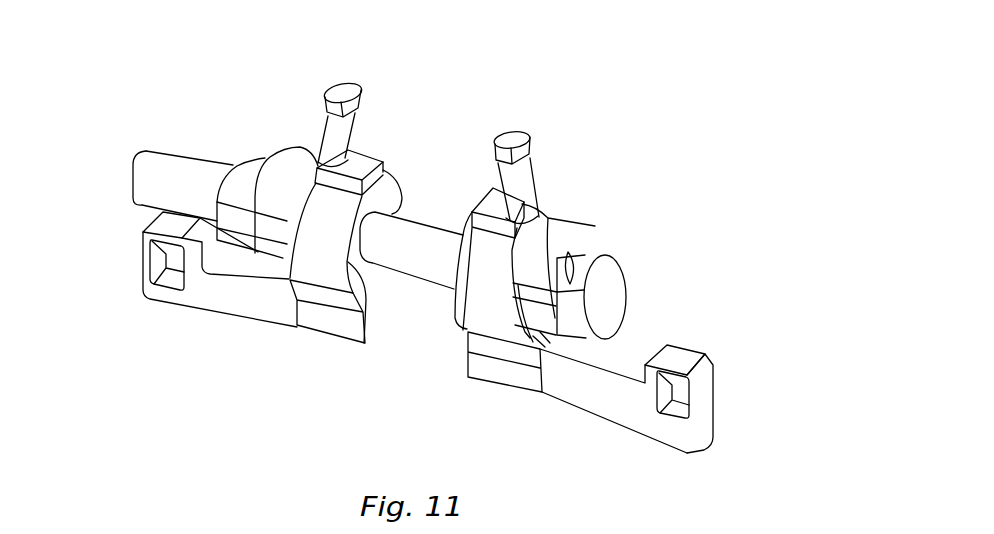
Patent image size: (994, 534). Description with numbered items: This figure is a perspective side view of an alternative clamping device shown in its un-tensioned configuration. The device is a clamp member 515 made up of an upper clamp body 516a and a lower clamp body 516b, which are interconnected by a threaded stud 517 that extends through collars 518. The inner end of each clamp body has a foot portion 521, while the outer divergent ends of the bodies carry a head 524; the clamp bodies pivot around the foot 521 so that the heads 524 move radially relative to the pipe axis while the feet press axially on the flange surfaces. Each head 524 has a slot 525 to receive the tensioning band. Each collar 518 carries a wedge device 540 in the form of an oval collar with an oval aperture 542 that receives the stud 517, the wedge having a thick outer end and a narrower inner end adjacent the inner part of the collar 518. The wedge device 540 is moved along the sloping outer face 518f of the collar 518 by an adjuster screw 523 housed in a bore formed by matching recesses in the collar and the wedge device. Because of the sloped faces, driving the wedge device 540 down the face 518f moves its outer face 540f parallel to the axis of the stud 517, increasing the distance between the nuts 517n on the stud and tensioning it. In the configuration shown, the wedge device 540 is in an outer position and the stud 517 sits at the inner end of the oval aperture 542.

The clamp member 515 is at (600, 66).
The upper clamp body 516a is at (224, 340).
The lower clamp body 516b is at (607, 450).
The threaded stud 517 is at (427, 237).
The nut 517n is at (238, 177).
The collar 518 is at (322, 270).
The sloping outer face of the collar 518f is at (533, 333).
The foot portion 521 is at (369, 330).
The adjuster screw 523 is at (333, 92).
The head 524 is at (146, 320).
The slot 525 is at (160, 258).
The wedge device 540 is at (284, 158).
The outer face of the wedge device 540f is at (596, 232).
The oval aperture 542 is at (587, 256).